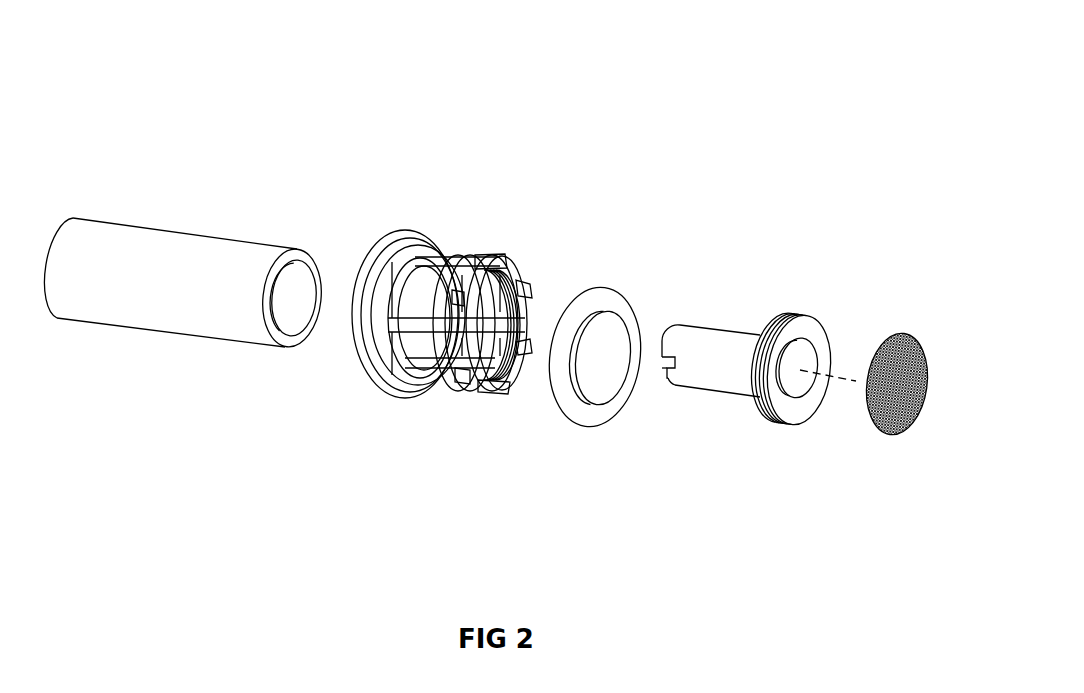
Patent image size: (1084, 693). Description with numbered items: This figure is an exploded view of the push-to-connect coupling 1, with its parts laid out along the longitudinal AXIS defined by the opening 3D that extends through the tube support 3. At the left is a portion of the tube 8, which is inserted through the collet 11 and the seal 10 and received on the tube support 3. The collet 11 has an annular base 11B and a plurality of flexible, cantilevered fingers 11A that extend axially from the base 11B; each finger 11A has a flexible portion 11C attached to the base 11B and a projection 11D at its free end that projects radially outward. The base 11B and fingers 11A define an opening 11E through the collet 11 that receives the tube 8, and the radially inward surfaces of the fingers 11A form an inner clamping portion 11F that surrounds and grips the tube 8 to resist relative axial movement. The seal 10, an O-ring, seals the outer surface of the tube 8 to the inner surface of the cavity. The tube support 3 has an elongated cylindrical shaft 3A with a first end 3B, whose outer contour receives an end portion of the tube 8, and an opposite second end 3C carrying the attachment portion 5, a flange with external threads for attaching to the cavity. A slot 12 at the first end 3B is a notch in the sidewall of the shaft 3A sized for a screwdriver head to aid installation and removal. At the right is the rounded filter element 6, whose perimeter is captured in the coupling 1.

The push-to-connect coupling 1 is at (268, 156).
The tube 8 is at (200, 258).
The collet 11 is at (436, 320).
The fingers 11A is at (527, 287).
The annular base 11B is at (368, 382).
The flexible portion 11C is at (433, 372).
The projection 11D is at (460, 372).
The opening 11E is at (490, 327).
The inner clamping portion 11F is at (527, 330).
The seal 10 is at (611, 275).
The tube support 3 is at (749, 365).
The shaft 3A is at (707, 367).
The first end 3B is at (673, 313).
The second end 3C is at (789, 303).
The opening 3D is at (802, 366).
The attachment portion 5 is at (771, 425).
The slot 12 is at (663, 364).
The filter element 6 is at (904, 321).
The longitudinal axis AXIS is at (833, 392).